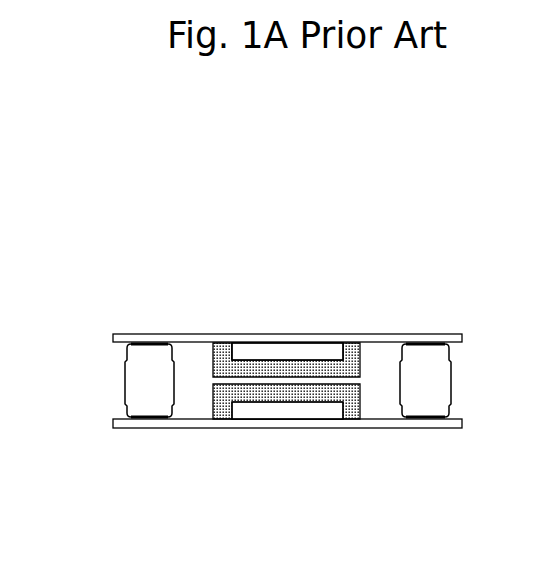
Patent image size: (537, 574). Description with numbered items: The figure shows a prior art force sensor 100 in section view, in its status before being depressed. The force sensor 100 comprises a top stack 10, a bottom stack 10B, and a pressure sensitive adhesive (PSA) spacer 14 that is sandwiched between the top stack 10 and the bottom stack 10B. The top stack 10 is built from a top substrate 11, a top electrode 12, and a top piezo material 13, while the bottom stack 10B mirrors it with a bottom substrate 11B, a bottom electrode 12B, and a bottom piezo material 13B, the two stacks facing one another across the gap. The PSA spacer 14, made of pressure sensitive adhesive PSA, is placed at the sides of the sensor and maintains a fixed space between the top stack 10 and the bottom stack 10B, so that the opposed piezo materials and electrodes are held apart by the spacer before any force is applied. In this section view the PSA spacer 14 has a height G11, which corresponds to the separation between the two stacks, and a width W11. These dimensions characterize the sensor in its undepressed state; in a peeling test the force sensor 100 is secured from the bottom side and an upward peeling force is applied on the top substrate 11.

The force sensor 100 is at (311, 167).
The top stack 10 is at (287, 312).
The top substrate 11 is at (243, 334).
The top electrode 12 is at (260, 352).
The top piezo material 13 is at (282, 370).
The bottom stack 10B is at (287, 447).
The bottom substrate 11B is at (257, 428).
The bottom electrode 12B is at (275, 410).
The bottom piezo material 13B is at (300, 392).
The PSA spacer 14 is at (158, 390).
The pressure sensitive adhesive PSA is at (132, 384).
The height G11 is at (536, 344).
The width W11 is at (235, 473).